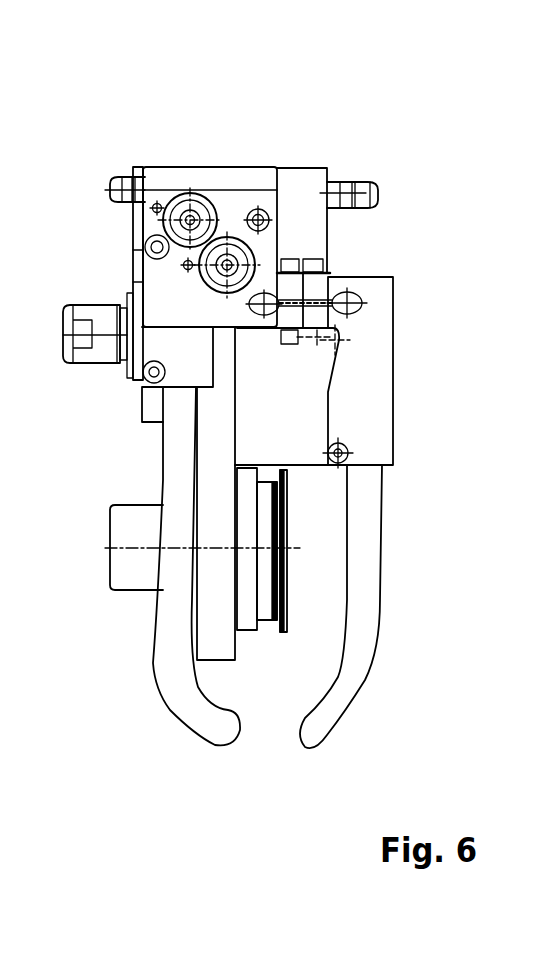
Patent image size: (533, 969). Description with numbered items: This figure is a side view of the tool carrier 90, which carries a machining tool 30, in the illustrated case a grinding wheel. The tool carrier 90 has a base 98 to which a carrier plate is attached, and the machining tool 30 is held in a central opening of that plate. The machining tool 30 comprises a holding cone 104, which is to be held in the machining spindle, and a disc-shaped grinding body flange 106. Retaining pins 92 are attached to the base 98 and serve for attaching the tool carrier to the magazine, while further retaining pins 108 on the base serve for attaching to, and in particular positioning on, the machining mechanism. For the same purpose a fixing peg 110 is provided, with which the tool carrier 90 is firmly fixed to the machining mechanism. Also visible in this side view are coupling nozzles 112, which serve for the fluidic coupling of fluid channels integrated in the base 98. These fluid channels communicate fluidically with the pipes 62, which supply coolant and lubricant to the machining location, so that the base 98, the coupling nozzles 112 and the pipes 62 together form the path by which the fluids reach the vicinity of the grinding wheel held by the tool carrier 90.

The machining tool 30 is at (138, 601).
The pipes 62 is at (370, 605).
The tool carrier 90 is at (228, 138).
The retaining pins 92 is at (362, 181).
The base 98 is at (295, 200).
The holding cone 104 is at (120, 570).
The grinding body flange 106 is at (278, 630).
The retaining pins 108 is at (111, 179).
The fixing peg 110 is at (103, 352).
The coupling nozzles 112 is at (133, 260).